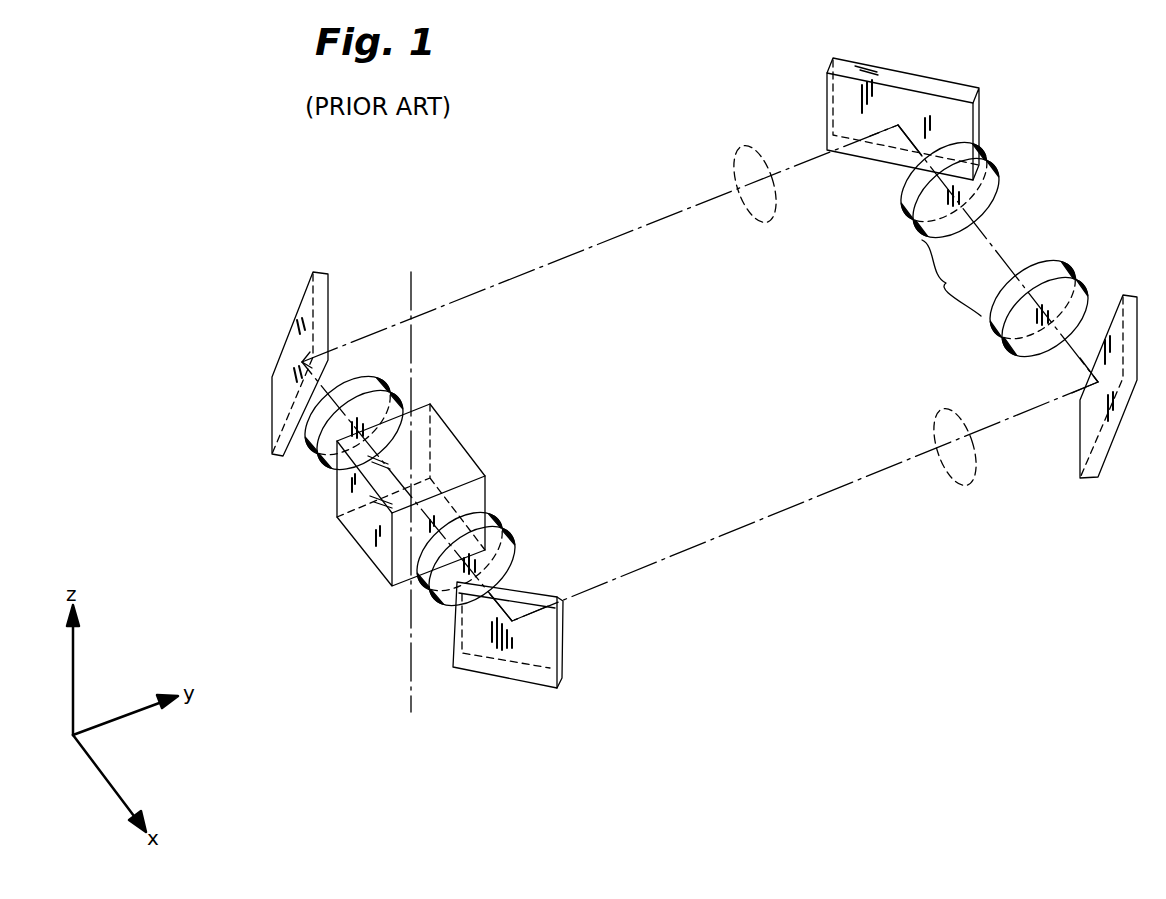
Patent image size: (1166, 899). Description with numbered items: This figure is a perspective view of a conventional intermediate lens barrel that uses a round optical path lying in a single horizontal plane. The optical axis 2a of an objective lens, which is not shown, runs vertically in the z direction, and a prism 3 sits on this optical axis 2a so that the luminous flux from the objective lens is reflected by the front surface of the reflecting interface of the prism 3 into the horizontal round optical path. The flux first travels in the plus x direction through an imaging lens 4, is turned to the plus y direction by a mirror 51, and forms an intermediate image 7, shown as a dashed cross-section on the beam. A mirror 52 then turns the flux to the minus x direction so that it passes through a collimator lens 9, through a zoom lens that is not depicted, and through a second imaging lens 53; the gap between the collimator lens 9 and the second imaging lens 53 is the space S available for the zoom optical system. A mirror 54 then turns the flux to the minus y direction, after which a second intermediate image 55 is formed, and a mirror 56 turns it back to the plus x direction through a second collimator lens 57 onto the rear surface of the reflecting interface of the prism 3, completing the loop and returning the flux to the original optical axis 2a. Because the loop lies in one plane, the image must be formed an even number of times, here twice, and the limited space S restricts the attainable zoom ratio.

The optical axis 2a is at (410, 688).
The prism 3 is at (360, 530).
The imaging lens 4 is at (503, 557).
The intermediate image 7 is at (978, 477).
The collimator lens 9 is at (1046, 262).
The mirror 51 is at (565, 642).
The mirror 52 is at (1079, 430).
The second imaging lens 53 is at (906, 203).
The mirror 54 is at (827, 103).
The second intermediate image 55 is at (777, 217).
The mirror 56 is at (328, 317).
The second collimator lens 57 is at (383, 380).
The space for the zoom optical system S is at (951, 278).